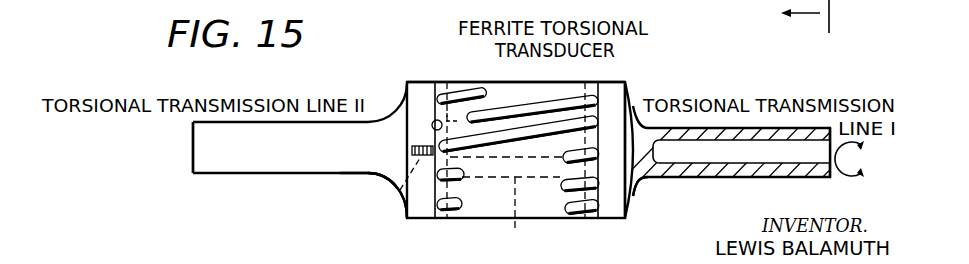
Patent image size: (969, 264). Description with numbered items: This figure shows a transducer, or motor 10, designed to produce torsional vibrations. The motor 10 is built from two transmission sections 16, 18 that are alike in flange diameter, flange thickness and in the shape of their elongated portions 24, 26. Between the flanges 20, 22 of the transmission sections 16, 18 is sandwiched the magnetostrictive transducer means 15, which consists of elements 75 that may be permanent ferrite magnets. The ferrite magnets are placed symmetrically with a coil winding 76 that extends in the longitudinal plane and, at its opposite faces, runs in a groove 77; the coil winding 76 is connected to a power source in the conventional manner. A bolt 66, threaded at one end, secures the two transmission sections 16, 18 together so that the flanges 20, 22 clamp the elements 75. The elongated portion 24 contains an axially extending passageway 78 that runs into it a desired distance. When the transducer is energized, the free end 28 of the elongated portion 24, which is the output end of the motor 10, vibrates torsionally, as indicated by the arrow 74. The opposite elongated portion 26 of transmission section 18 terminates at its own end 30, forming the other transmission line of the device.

The motor 10 is at (425, 224).
The magnetostrictive transducer means 15 is at (570, 219).
The transmission section 16 is at (641, 190).
The transmission section 18 is at (374, 178).
The flange 20 is at (617, 92).
The flange 22 is at (420, 84).
The elongated portion 24 is at (748, 128).
The elongated portion 26 is at (258, 166).
The output end 28 is at (830, 178).
The free end of transmission line II 30 is at (192, 140).
The bolt 66 is at (399, 194).
The arrow 74 is at (857, 183).
The elements 75 is at (512, 230).
The coil winding 76 is at (556, 98).
The groove 77 is at (435, 120).
The axially extending passageway 78 is at (731, 163).